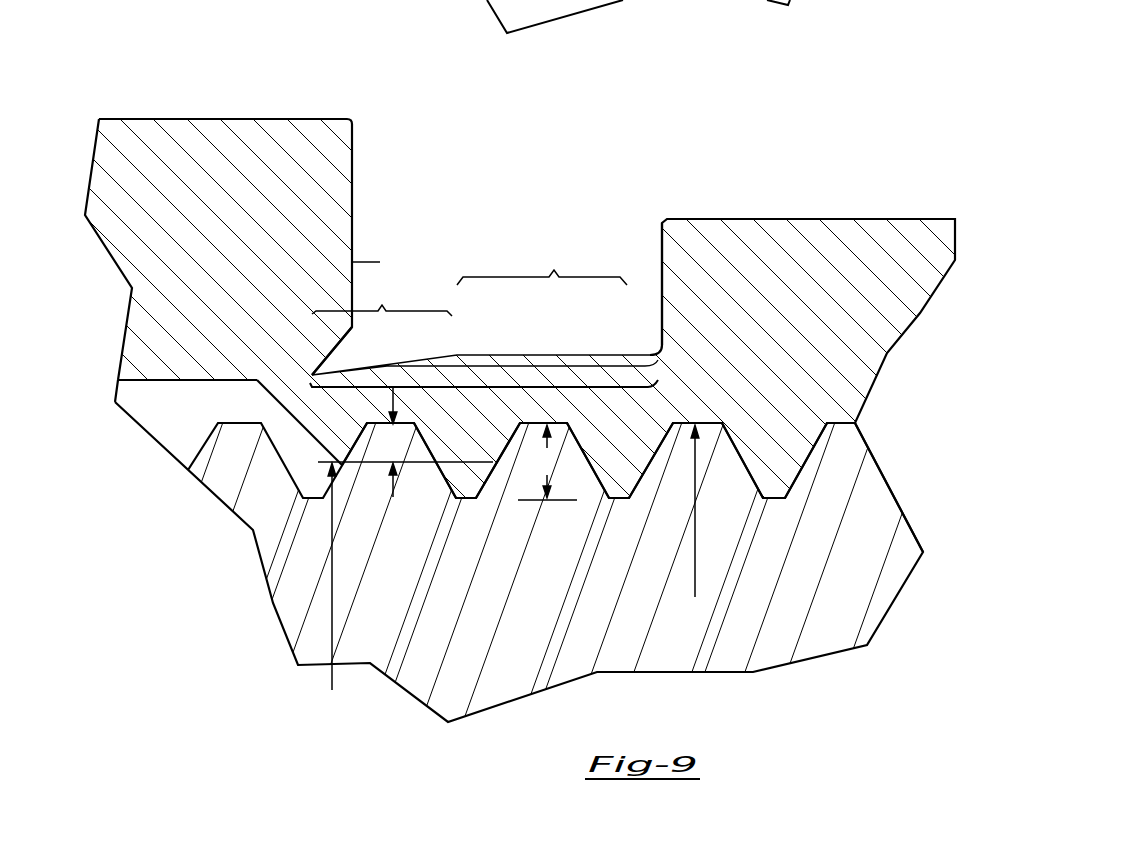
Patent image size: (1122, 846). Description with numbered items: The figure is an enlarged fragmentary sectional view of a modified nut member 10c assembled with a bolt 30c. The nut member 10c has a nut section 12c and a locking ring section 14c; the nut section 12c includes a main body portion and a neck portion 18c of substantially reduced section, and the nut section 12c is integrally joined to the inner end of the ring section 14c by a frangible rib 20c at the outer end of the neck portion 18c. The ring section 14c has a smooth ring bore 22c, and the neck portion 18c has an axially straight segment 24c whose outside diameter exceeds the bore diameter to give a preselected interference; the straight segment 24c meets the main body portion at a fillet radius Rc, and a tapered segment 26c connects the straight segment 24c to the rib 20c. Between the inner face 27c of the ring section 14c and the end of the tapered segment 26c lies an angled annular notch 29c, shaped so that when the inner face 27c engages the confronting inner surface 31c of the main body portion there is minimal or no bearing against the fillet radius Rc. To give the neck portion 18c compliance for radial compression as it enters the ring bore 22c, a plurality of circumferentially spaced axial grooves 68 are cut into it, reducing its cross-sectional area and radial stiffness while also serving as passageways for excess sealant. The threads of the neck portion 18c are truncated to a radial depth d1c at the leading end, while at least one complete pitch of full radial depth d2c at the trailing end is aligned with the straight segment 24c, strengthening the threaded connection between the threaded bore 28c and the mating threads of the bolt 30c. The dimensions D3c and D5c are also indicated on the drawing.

The nut member 10c is at (282, 102).
The locking ring section 14c is at (152, 120).
The nut section 12c is at (380, 122).
The inner face of the ring section 27c is at (380, 262).
The tapered segment 26c is at (382, 295).
The annular notch 29c is at (340, 348).
The inner surface of the main body portion 31c is at (662, 241).
The straight segment 24c is at (542, 263).
The axial grooves 68 is at (503, 356).
The fillet radius Rc is at (648, 356).
The neck portion 18c is at (482, 387).
The ring bore 22c is at (168, 382).
The frangible rib 20c is at (287, 383).
The bolt 30c is at (868, 613).
The threaded bore 28c is at (824, 435).
The truncated thread radial depth d1c is at (405, 442).
The full thread radial depth d2c is at (547, 462).
The thread crest diameter D3c is at (700, 527).
The seal diameter D5c is at (336, 596).